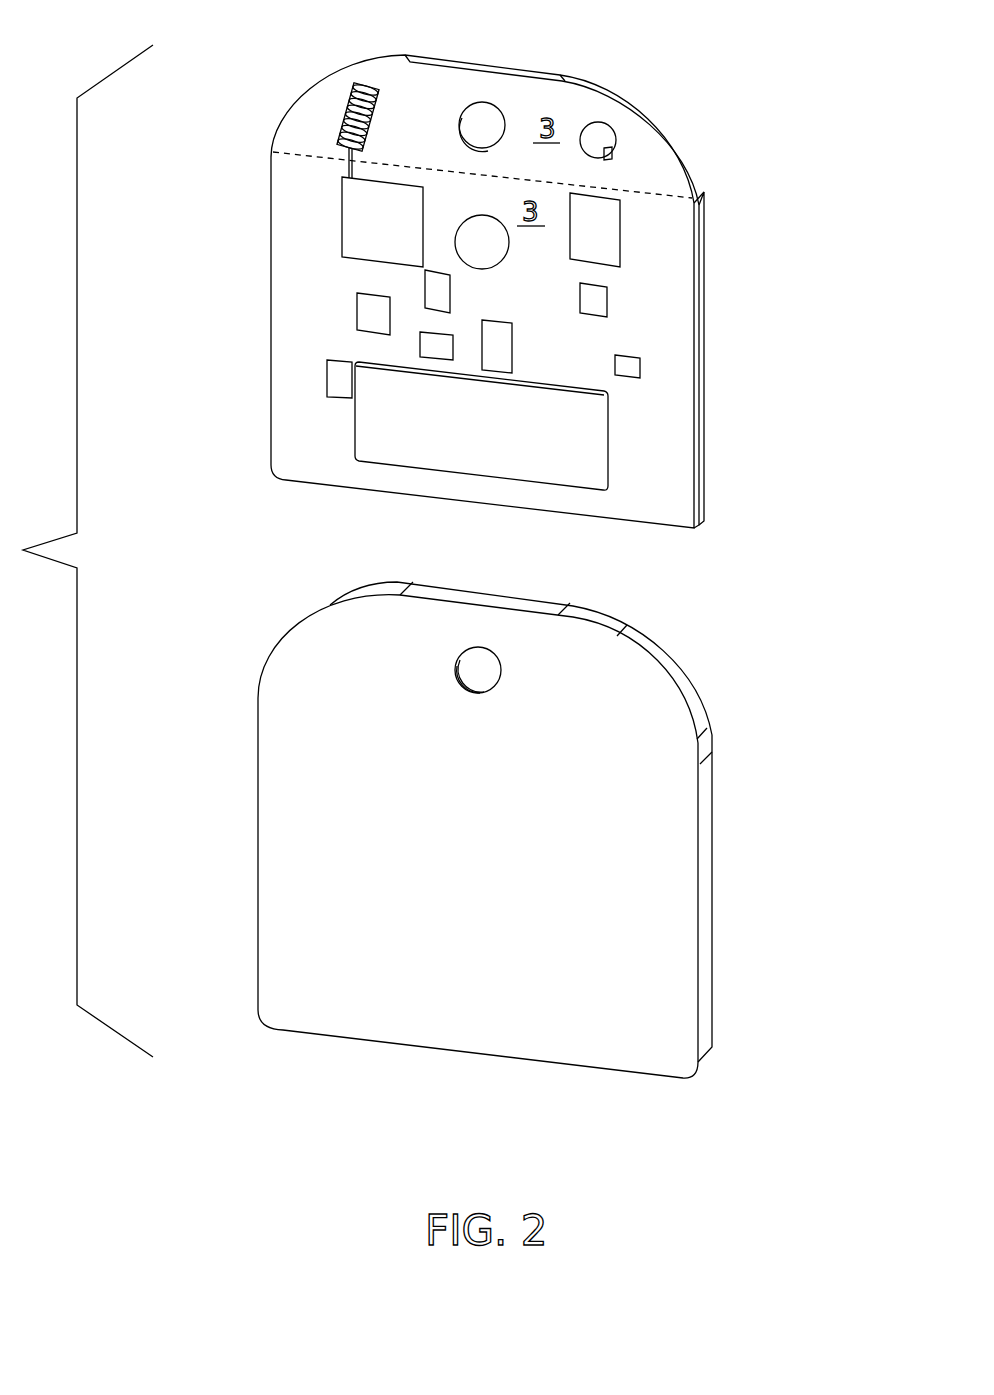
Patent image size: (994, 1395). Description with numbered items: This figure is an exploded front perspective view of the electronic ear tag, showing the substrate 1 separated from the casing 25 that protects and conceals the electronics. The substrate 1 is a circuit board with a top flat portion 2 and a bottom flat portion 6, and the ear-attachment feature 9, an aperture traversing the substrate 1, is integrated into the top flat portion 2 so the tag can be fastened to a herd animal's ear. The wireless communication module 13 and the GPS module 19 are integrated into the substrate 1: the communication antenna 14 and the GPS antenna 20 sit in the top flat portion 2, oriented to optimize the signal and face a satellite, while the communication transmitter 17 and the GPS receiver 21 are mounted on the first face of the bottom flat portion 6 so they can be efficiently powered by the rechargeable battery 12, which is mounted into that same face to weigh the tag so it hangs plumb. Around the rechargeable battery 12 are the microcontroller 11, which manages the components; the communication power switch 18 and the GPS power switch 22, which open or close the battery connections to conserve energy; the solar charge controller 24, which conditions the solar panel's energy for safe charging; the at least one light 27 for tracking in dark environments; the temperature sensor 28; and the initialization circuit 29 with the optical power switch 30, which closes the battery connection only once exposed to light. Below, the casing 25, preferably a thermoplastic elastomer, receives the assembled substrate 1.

The substrate 1 is at (797, 115).
The top flat portion 2 is at (290, 132).
The bottom flat portion 6 is at (286, 304).
The ear-attachment feature 9 is at (481, 128).
The microcontroller 11 is at (510, 342).
The rechargeable battery 12 is at (605, 467).
The wireless communication module 13 is at (300, 182).
The communication antenna 14 is at (367, 122).
The communication transmitter 17 is at (345, 218).
The communication power switch 18 is at (358, 310).
The global positioning system (GPS) module 19 is at (651, 219).
The GPS antenna 20 is at (608, 152).
The GPS receiver 21 is at (618, 240).
The GPS power switch 22 is at (605, 304).
The solar charge controller 24 is at (339, 396).
The casing 25 is at (270, 773).
The at least one light 27 is at (627, 376).
The temperature sensor 28 is at (500, 260).
The initialization circuit 29 is at (450, 280).
The optical power switch 30 is at (422, 338).